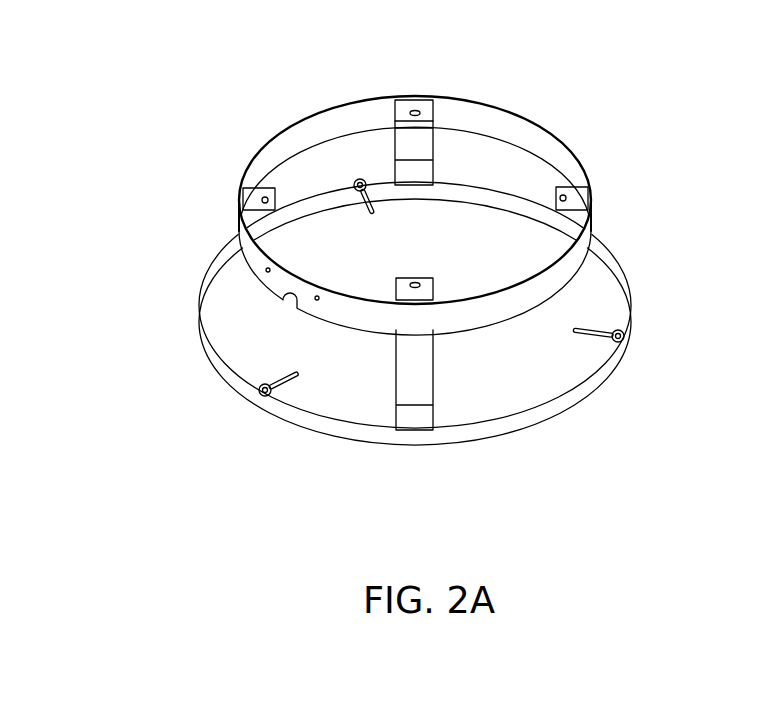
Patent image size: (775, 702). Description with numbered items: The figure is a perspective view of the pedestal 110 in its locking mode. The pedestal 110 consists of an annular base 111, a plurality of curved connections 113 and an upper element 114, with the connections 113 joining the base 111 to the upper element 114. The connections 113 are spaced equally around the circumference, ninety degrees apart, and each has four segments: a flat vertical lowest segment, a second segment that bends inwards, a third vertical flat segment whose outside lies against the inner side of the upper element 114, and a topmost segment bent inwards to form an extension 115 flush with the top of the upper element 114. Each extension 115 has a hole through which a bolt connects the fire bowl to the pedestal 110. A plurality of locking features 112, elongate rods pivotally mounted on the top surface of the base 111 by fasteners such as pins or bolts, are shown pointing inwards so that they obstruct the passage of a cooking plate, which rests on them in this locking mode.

The pedestal 110 is at (242, 100).
The base 111 is at (225, 368).
The locking feature 112 is at (620, 333).
The curved connection 113 is at (413, 382).
The upper element 114 is at (467, 113).
The extension 115 is at (577, 203).